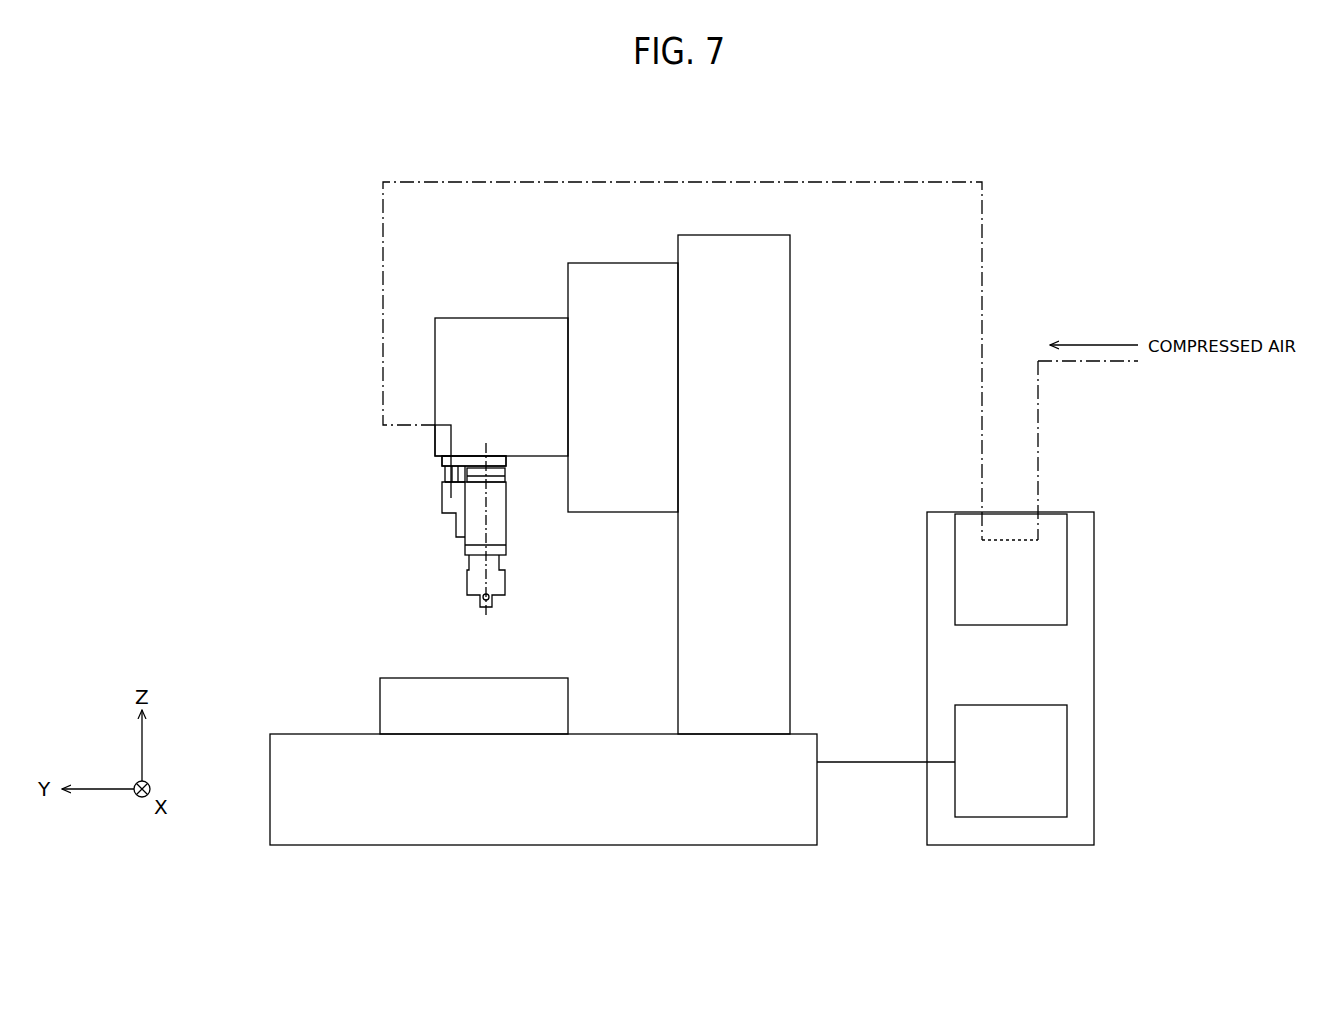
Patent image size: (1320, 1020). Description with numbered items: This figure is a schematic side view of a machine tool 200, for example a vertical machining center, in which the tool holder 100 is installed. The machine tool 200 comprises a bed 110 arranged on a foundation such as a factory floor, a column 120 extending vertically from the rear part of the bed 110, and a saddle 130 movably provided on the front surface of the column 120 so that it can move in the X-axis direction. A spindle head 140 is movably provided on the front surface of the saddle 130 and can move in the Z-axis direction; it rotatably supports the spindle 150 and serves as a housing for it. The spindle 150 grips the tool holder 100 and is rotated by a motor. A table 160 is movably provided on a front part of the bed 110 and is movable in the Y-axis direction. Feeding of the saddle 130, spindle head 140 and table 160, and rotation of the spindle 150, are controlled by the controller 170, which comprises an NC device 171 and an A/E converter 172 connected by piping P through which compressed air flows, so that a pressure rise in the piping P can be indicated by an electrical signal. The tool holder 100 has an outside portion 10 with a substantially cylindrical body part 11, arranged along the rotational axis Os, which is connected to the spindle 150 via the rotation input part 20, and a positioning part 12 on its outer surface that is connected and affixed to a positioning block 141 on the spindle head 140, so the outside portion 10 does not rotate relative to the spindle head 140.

The machine tool 200 is at (260, 108).
The tool holder 100 is at (421, 536).
The outside portion 10 is at (440, 526).
The body part 11 is at (470, 542).
The positioning part 12 is at (442, 493).
The rotation input part 20 is at (505, 476).
The bed 110 is at (543, 825).
The column 120 is at (760, 362).
The saddle 130 is at (623, 295).
The spindle head 140 is at (502, 335).
The positioning block 141 is at (442, 463).
The spindle 150 is at (507, 463).
The table 160 is at (388, 706).
The controller 170 is at (1012, 845).
The NC device 171 is at (1058, 762).
The A/E converter 172 is at (1058, 570).
The piping P is at (890, 178).
The rotational axis Os is at (507, 575).